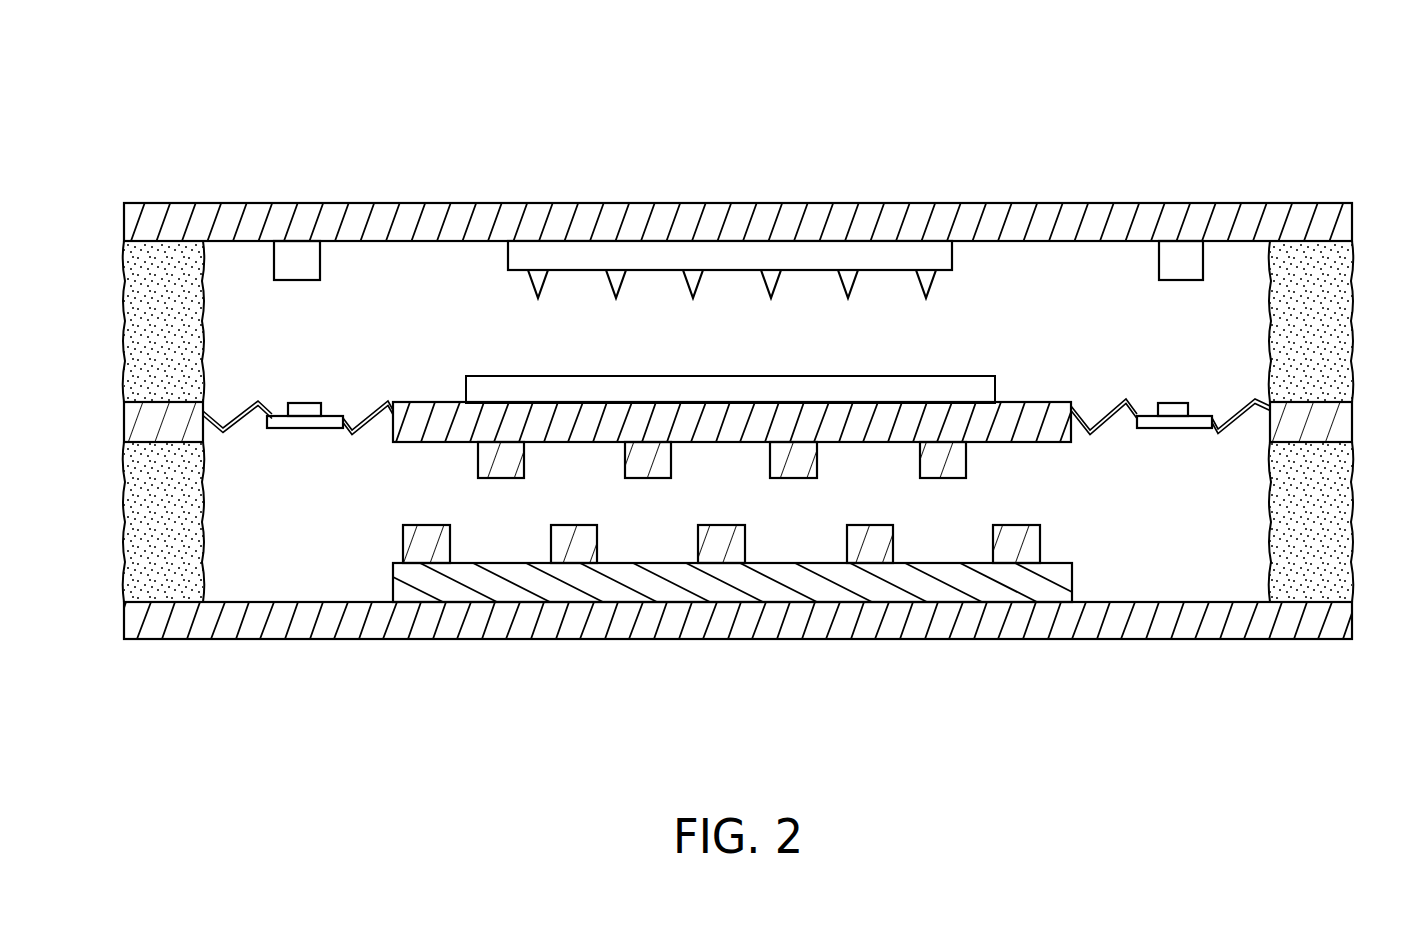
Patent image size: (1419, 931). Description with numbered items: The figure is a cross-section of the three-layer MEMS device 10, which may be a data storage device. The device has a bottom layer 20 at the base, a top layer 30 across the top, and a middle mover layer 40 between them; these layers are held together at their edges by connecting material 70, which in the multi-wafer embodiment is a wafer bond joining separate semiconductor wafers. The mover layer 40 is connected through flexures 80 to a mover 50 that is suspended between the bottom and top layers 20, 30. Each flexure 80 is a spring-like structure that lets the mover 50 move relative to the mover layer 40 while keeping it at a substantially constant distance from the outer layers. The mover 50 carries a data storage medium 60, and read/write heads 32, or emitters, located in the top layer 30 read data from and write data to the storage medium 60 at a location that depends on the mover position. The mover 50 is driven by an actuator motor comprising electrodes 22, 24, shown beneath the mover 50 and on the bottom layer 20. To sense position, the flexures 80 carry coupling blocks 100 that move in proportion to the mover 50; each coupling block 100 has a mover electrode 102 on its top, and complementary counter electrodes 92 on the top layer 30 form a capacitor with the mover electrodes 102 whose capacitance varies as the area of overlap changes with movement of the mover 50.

The MEMS device 10 is at (270, 125).
The bottom layer 20 is at (318, 630).
The electrode 22 is at (1010, 552).
The electrode 24 is at (515, 463).
The top layer 30 is at (263, 230).
The read/write heads 32 is at (737, 258).
The mover layer 40 is at (174, 434).
The mover 50 is at (723, 432).
The data storage medium 60 is at (613, 395).
The connecting material 70 is at (155, 332).
The flexure 80 is at (360, 420).
The counter electrode 92 is at (290, 258).
The coupling block 100 is at (304, 425).
The mover electrode 102 is at (305, 402).